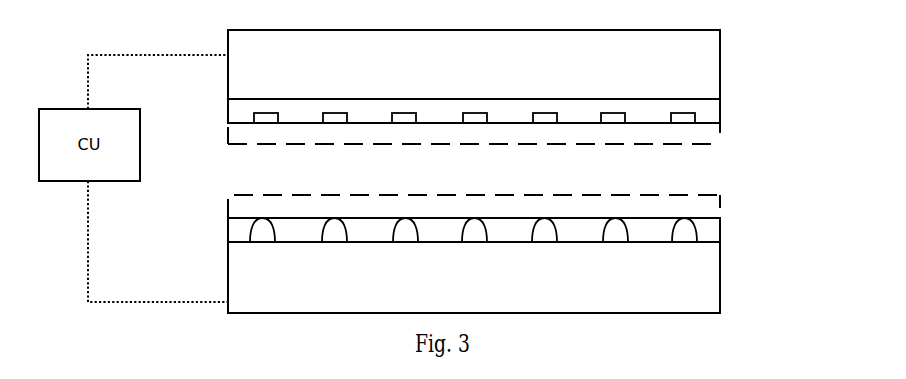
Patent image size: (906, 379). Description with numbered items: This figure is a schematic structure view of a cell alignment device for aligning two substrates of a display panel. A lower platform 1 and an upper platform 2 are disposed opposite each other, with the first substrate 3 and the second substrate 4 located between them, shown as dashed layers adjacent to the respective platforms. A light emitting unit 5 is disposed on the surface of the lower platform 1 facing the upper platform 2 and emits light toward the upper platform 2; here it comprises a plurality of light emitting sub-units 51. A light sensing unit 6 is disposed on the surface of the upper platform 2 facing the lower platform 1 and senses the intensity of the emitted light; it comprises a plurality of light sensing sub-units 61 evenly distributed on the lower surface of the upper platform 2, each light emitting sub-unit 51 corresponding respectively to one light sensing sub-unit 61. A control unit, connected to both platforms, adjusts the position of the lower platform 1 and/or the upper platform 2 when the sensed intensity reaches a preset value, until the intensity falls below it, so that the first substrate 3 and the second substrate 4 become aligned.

The lower platform 1 is at (720, 260).
The upper platform 2 is at (720, 76).
The first substrate 3 is at (228, 209).
The second substrate 4 is at (228, 144).
The light emitting unit 5 is at (720, 227).
The light sensing unit 6 is at (720, 109).
The light emitting sub-unit 51 is at (252, 232).
The light sensing sub-unit 61 is at (254, 113).